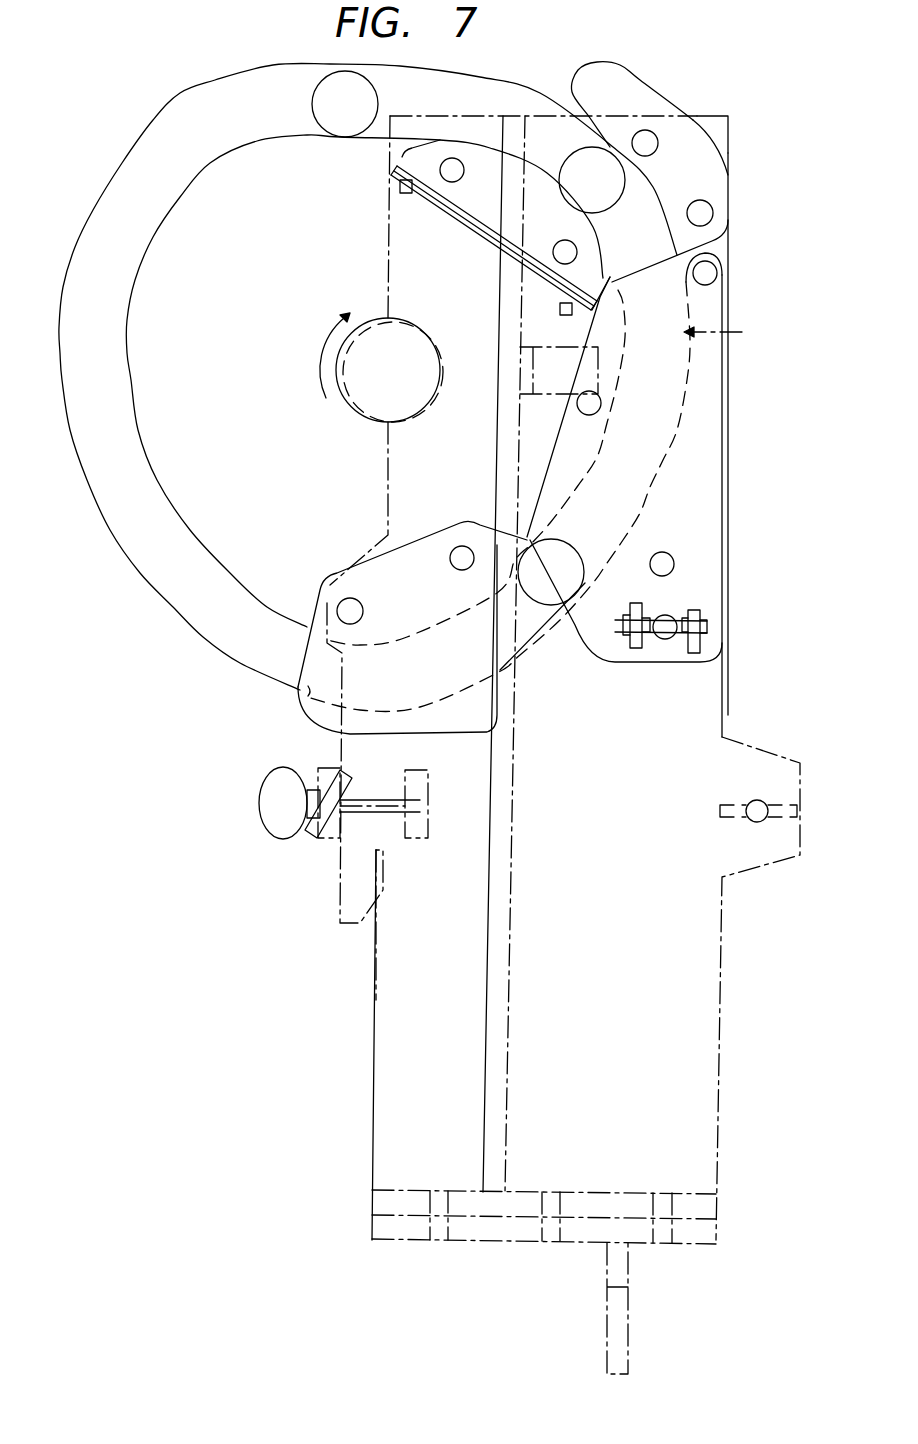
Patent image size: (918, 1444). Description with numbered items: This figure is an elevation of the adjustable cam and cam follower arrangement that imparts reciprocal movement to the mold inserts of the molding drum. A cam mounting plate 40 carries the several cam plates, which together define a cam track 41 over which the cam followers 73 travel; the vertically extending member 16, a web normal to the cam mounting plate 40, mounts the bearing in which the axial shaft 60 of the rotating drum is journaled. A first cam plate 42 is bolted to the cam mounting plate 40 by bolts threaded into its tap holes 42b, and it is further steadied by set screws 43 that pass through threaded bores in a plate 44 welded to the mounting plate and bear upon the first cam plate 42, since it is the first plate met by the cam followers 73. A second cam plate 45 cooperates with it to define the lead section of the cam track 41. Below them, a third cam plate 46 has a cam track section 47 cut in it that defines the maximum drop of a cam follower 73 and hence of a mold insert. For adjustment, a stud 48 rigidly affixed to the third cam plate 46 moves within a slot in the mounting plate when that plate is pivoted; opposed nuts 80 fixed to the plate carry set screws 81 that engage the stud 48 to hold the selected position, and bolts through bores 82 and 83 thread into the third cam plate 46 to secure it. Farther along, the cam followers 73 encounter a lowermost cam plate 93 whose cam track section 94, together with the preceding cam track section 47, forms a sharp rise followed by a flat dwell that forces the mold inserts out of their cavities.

The vertically extending member 16 is at (512, 827).
The cam mounting plate 40 is at (372, 950).
The cam track 41 is at (650, 261).
The first cam plate 42 is at (506, 197).
The tap holes 42b is at (456, 172).
The set screws 43 is at (402, 190).
The plate 44 is at (472, 252).
The second cam plate 45 is at (620, 86).
The third cam plate 46 is at (716, 418).
The cam track section 47 is at (729, 334).
The stud 48 is at (680, 641).
The axial shaft 60 is at (402, 367).
The cam followers 73 is at (313, 103).
The nuts 80 is at (633, 648).
The set screws 81 is at (629, 622).
The bore 82 is at (588, 416).
The bore 83 is at (672, 560).
The lowermost cam plate 93 is at (377, 722).
The cam track section 94 is at (300, 690).